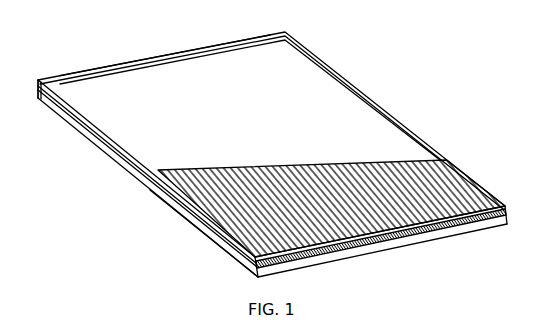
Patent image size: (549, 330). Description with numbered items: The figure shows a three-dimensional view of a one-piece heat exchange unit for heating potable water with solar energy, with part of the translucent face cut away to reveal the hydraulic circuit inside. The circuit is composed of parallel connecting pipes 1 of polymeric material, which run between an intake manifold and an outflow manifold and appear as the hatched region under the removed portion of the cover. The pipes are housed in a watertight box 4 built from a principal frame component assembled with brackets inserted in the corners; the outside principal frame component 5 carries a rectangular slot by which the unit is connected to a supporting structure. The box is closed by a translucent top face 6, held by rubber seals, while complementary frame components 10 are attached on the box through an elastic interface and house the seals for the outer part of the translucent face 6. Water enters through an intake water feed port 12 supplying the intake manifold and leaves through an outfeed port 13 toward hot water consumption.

The parallel connecting pipes 1 is at (222, 211).
The watertight box 4 is at (143, 60).
The outside principal frame component 5 is at (440, 232).
The translucent top face 6 is at (363, 107).
The complementary frame components 10 is at (300, 44).
The intake water feed port 12 is at (247, 269).
The outfeed port 13 is at (40, 102).